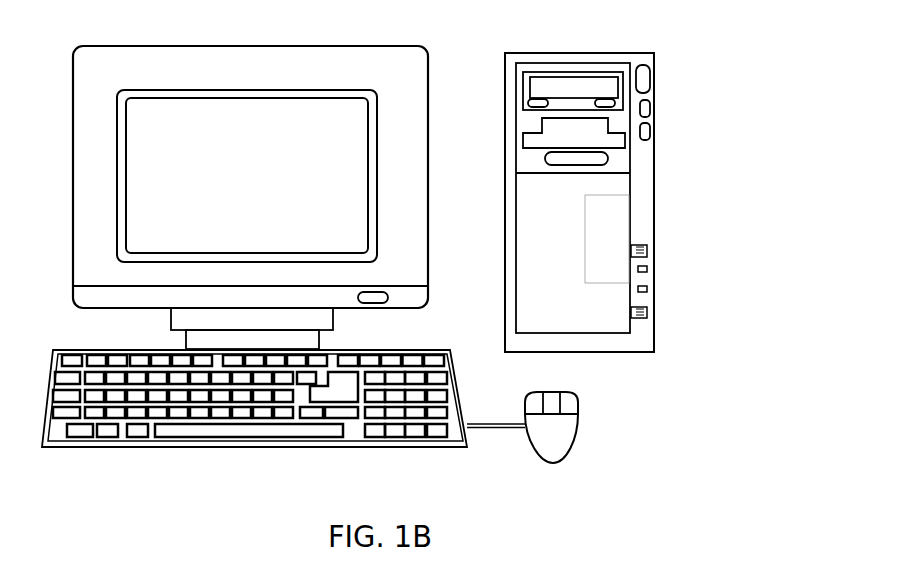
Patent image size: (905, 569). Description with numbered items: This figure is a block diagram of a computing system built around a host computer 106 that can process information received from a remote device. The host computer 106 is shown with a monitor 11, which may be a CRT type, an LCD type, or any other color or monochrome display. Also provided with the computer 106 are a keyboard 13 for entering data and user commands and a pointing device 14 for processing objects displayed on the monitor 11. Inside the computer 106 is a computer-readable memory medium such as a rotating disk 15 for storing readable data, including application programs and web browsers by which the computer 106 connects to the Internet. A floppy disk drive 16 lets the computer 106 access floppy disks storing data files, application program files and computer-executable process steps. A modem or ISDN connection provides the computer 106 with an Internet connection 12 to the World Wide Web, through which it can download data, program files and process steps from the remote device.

The monitor 11 is at (388, 84).
The Internet connection 12 is at (707, 306).
The keyboard 13 is at (172, 448).
The pointing device 14 is at (575, 435).
The rotating disk 15 is at (540, 102).
The floppy disk drive 16 is at (557, 157).
The host computer 106 is at (626, 200).